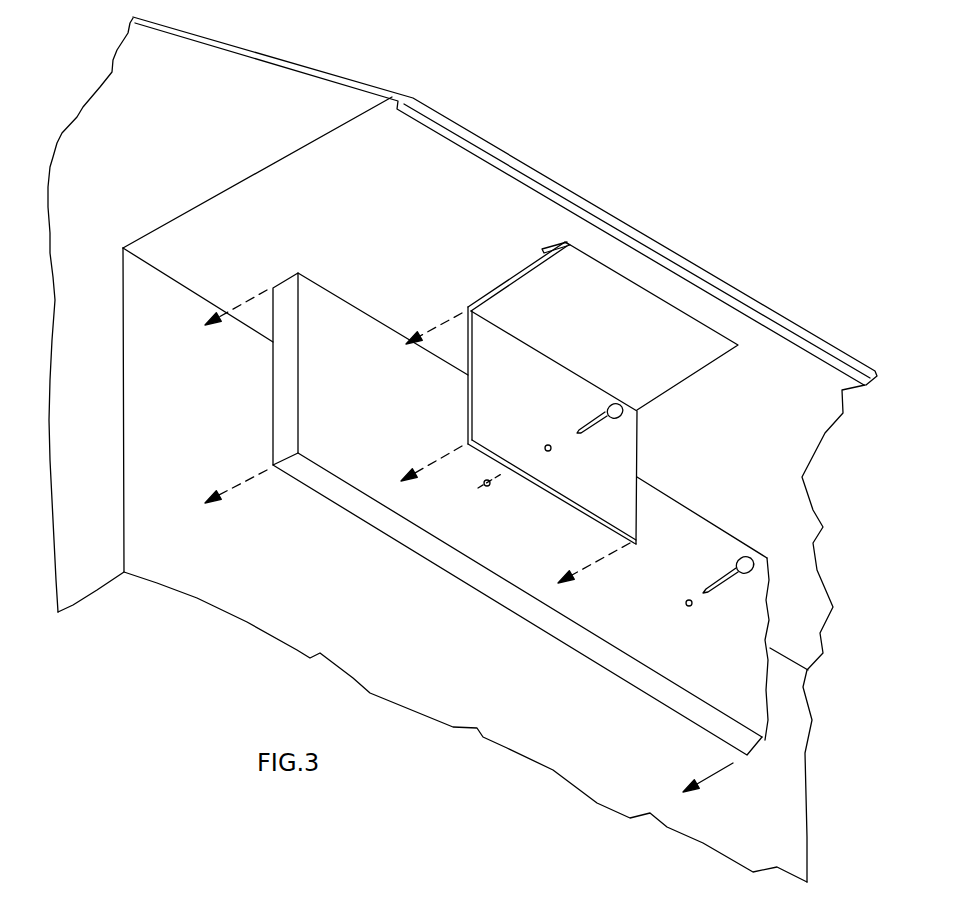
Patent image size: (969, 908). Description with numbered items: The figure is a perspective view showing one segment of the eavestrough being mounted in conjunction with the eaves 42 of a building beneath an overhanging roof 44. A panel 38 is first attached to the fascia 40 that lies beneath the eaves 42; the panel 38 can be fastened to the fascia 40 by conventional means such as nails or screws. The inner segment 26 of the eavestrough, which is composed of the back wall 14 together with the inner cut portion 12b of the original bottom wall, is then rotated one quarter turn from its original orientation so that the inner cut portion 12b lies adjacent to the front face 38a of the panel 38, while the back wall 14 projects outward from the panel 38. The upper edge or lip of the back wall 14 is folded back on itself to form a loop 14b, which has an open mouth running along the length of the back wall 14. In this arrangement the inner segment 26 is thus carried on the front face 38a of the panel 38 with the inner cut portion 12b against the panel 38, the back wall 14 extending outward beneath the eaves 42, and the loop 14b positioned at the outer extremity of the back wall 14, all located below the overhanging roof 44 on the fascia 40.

The inner cut portion 12b is at (467, 398).
The back wall 14 is at (578, 388).
The loop 14b is at (563, 242).
The inner segment 26 is at (671, 405).
The panel 38 is at (521, 512).
The front face 38a is at (348, 273).
The fascia 40 is at (432, 726).
The eaves 42 is at (467, 450).
The roof 44 is at (308, 63).